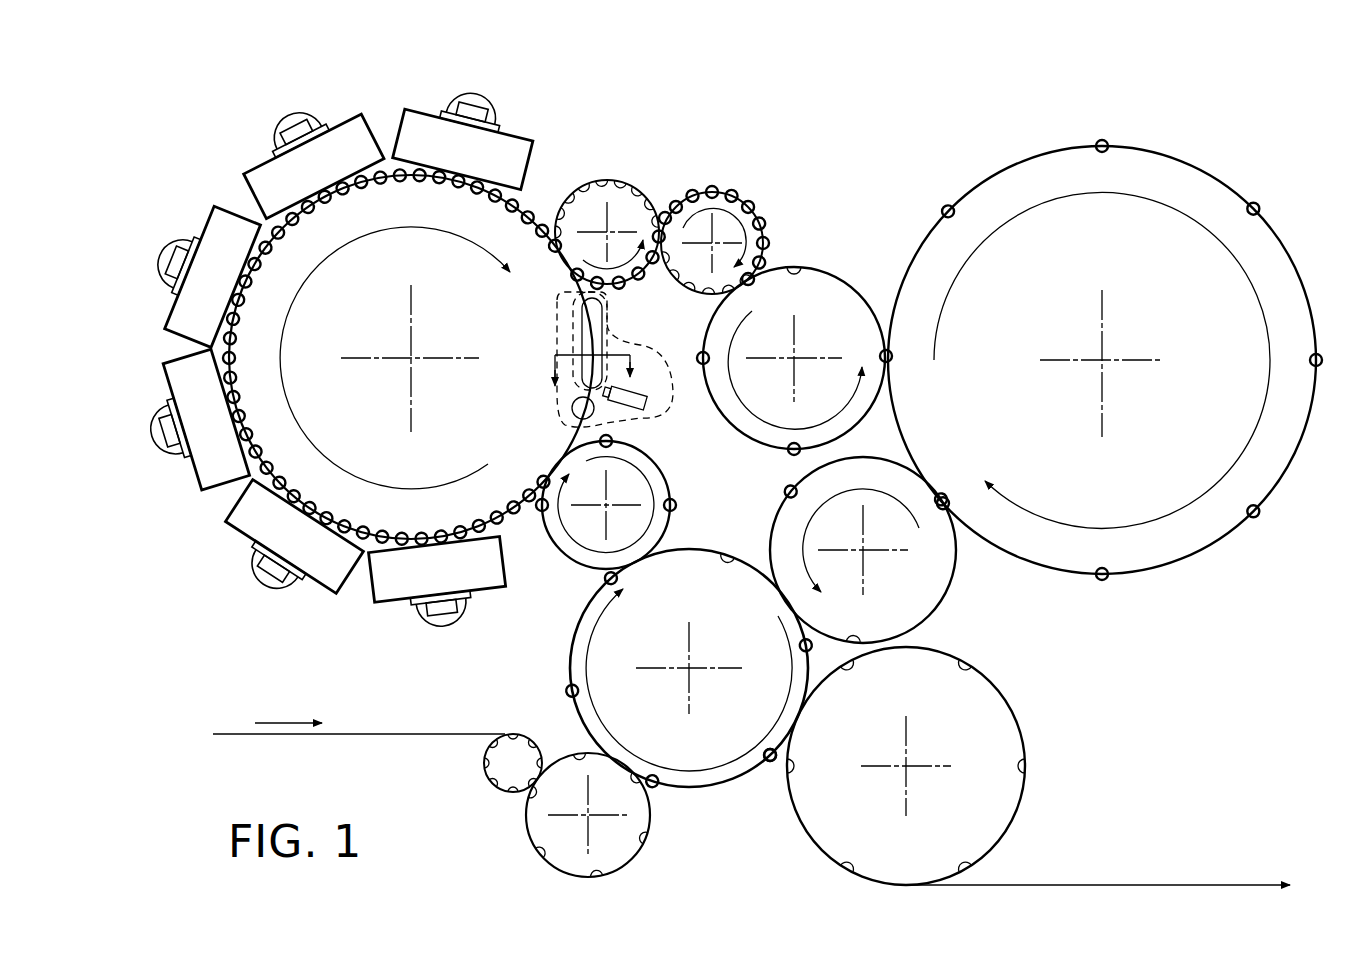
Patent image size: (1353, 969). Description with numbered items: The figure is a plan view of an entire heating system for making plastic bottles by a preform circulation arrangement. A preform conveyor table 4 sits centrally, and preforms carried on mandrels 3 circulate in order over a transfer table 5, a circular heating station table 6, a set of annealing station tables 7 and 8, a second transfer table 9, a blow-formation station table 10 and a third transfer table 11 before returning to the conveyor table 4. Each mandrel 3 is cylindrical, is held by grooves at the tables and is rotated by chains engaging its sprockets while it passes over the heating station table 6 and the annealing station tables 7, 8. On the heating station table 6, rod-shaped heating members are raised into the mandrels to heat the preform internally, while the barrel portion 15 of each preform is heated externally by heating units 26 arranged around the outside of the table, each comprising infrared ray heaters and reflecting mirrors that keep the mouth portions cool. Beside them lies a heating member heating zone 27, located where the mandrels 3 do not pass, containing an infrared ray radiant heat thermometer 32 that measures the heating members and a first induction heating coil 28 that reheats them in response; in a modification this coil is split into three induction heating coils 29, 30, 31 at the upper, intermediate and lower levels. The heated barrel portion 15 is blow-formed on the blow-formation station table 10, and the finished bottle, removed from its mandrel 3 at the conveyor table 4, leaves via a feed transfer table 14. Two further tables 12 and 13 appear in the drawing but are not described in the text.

The heating units 26 is at (397, 105).
The heating station table 6 is at (411, 358).
The annealing station table 7 is at (608, 232).
The annealing station table 8 is at (712, 243).
The second transfer table 9 is at (795, 360).
The blow-formation station table 10 is at (1099, 361).
The third transfer table 11 is at (863, 549).
The feed transfer table 14 is at (906, 766).
The feed roller 12 is at (513, 763).
The feed roller 13 is at (588, 815).
The preform conveyor table 4 is at (689, 668).
The transfer table 5 is at (606, 505).
The mandrel 3 is at (770, 758).
The first induction heating coil 28 is at (563, 306).
The heating member heating zone 27 is at (615, 340).
The barrel portion 15 is at (591, 370).
The induction heating coil 29 is at (506, 391).
The induction heating coil 30 is at (583, 408).
The induction heating coil 31 is at (573, 404).
The infrared ray radiant heat thermometer 32 is at (650, 403).